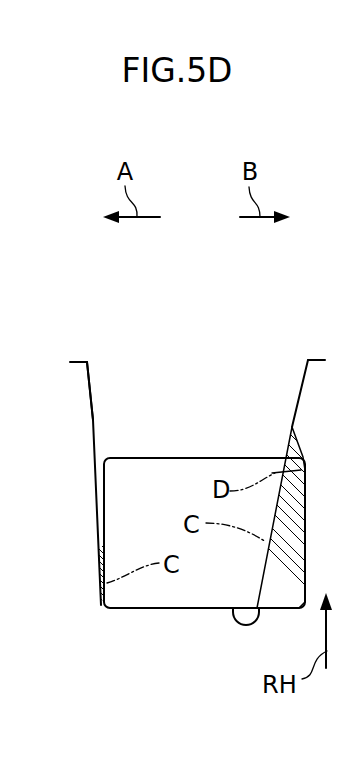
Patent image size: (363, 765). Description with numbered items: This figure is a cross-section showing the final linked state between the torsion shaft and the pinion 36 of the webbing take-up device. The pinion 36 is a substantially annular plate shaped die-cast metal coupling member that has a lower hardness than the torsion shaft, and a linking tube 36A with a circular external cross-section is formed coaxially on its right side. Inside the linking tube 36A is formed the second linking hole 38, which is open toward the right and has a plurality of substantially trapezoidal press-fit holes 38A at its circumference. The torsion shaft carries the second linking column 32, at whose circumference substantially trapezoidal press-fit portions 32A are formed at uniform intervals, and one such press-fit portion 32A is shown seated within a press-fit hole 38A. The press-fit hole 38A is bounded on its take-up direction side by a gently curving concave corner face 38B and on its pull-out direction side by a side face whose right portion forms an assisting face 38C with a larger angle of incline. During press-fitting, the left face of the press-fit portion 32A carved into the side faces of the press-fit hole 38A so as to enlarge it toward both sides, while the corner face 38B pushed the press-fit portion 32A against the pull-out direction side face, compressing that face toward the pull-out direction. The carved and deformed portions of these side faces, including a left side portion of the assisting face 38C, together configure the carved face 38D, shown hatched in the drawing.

The second linking column 32 is at (204, 505).
The press-fit portion 32A is at (178, 458).
The pinion 36 is at (70, 321).
The linking tube 36A is at (86, 360).
The second linking hole 38 is at (200, 468).
The press-fit hole 38A is at (90, 378).
The corner face 38B is at (97, 421).
The assisting face 38C is at (308, 368).
The carved face 38D is at (305, 561).